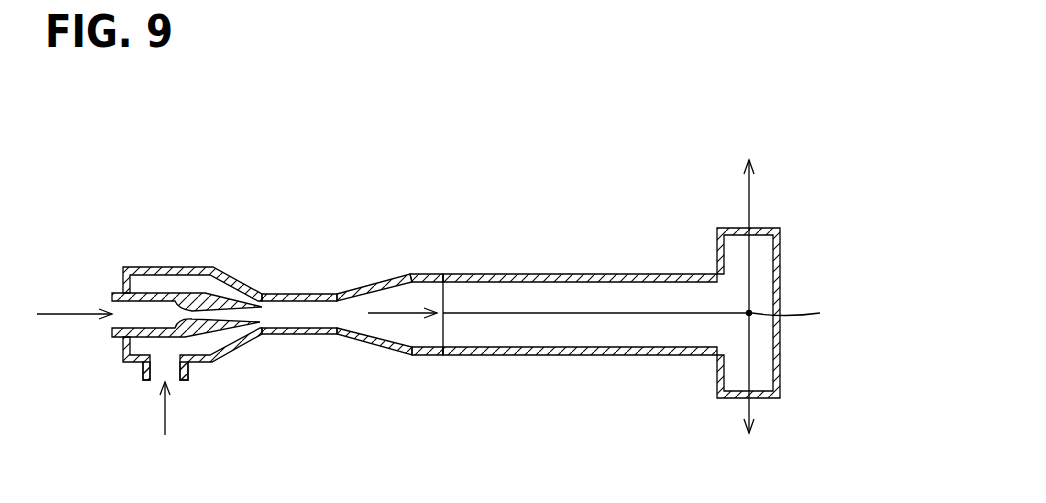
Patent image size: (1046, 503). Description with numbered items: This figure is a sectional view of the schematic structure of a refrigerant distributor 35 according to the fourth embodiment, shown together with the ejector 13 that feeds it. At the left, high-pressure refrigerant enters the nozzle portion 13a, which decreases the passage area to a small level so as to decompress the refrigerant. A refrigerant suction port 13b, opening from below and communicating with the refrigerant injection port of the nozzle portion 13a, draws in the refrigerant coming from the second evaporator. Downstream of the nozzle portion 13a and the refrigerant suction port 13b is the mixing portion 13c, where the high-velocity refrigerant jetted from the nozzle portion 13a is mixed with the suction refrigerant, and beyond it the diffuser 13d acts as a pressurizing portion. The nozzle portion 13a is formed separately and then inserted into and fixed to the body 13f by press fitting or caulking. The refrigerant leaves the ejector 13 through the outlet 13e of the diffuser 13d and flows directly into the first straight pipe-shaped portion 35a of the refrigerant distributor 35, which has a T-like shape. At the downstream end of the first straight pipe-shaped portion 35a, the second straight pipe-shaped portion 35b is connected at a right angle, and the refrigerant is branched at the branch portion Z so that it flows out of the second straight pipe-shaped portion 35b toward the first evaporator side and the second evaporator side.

The ejector 13 is at (257, 316).
The nozzle portion 13a is at (193, 314).
The refrigerant suction port 13b is at (157, 383).
The mixing portion 13c is at (291, 313).
The diffuser 13d is at (397, 323).
The outlet 13e is at (447, 330).
The body 13f is at (392, 277).
The refrigerant distributor 35 is at (644, 292).
The first straight pipe-shaped portion 35a is at (585, 330).
The second straight pipe-shaped portion 35b is at (764, 268).
The branch portion Z is at (797, 313).